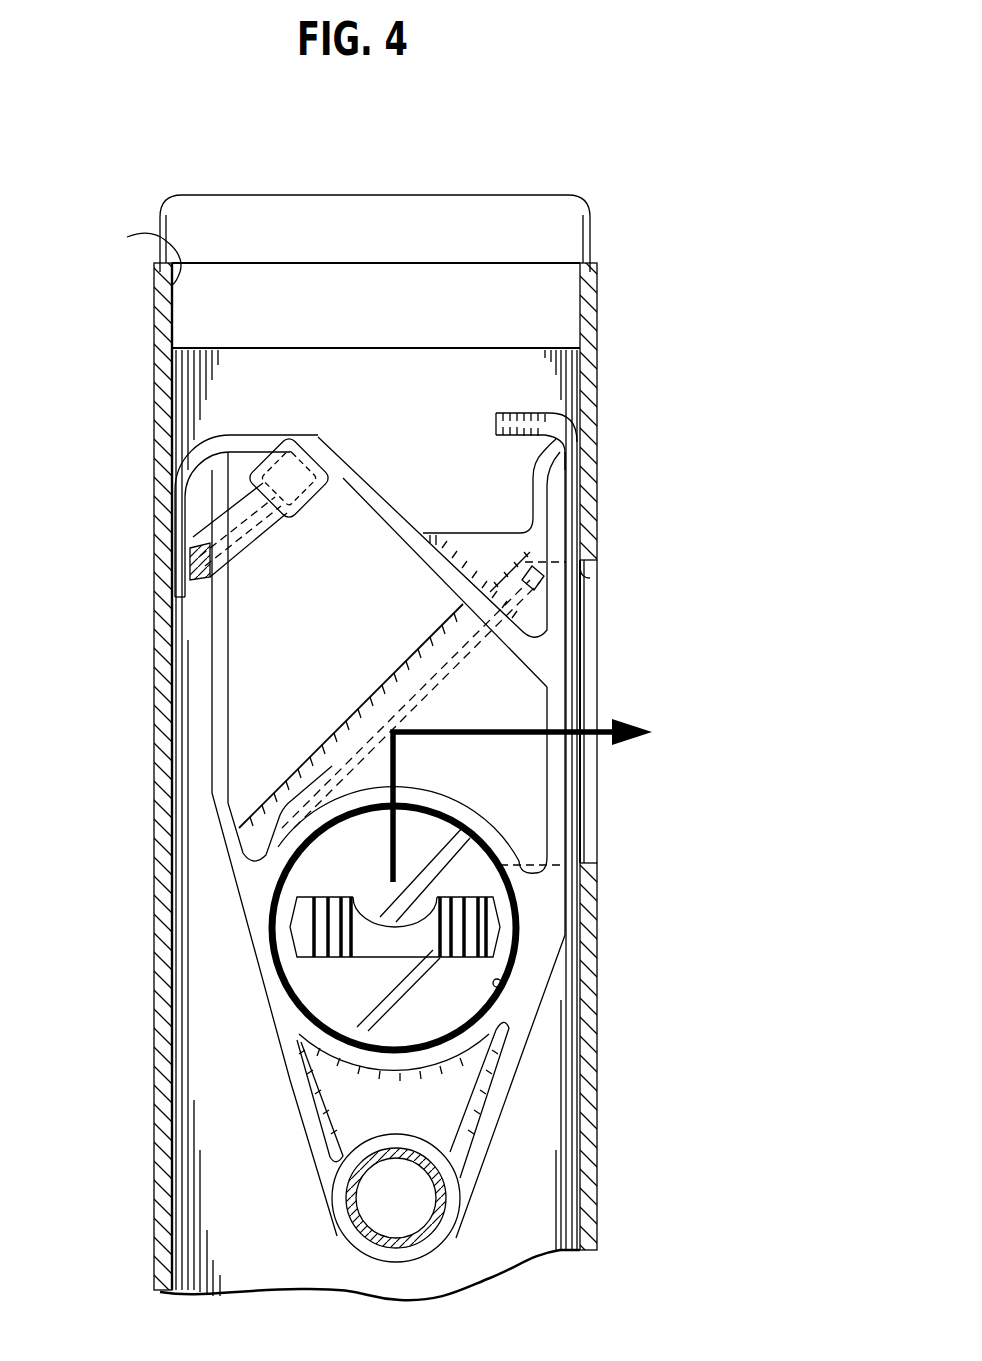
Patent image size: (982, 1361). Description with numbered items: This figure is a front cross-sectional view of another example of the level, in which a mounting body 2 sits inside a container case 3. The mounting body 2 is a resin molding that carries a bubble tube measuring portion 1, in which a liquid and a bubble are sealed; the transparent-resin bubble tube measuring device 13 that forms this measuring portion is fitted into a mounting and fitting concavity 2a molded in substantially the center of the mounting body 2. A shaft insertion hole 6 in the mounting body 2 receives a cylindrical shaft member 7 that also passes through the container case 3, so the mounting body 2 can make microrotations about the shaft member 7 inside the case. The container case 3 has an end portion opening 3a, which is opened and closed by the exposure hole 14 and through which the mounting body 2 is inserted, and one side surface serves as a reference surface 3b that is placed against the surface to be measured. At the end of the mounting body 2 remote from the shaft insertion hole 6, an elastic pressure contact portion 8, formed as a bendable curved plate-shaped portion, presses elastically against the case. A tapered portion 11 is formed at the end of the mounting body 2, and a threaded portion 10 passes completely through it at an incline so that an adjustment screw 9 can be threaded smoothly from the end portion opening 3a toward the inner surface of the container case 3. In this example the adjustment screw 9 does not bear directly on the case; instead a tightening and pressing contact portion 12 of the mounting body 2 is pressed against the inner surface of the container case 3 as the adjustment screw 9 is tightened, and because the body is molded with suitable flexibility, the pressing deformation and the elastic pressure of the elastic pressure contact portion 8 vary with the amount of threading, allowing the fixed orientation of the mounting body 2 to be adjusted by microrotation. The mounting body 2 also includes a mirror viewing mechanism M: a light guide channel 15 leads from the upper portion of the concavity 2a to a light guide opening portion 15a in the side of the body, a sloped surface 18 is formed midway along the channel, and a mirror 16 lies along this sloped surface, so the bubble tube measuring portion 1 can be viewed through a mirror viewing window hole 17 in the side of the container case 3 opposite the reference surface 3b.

The bubble tube measuring portion 1 is at (360, 908).
The mounting body 2 is at (553, 925).
The mounting and fitting concavity 2a is at (501, 984).
The container case 3 is at (154, 768).
The end portion opening 3a is at (129, 252).
The reference surface 3b is at (154, 388).
The shaft insertion hole 6 is at (443, 1197).
The shaft member 7 is at (347, 1203).
The elastic pressure contact portion 8 is at (550, 432).
The adjustment screw 9 is at (197, 537).
The threaded portion 10 is at (247, 557).
The tapered portion 11 is at (381, 489).
The tightening and pressing contact portion 12 is at (180, 572).
The bubble tube measuring device 13 is at (283, 933).
The exposure hole 14 is at (378, 208).
The light guide channel 15 is at (523, 772).
The light guide opening portion 15a is at (557, 822).
The mirror 16 is at (437, 677).
The mirror viewing window hole 17 is at (597, 577).
The sloped surface 18 is at (360, 737).
The mirror viewing mechanism M is at (624, 661).